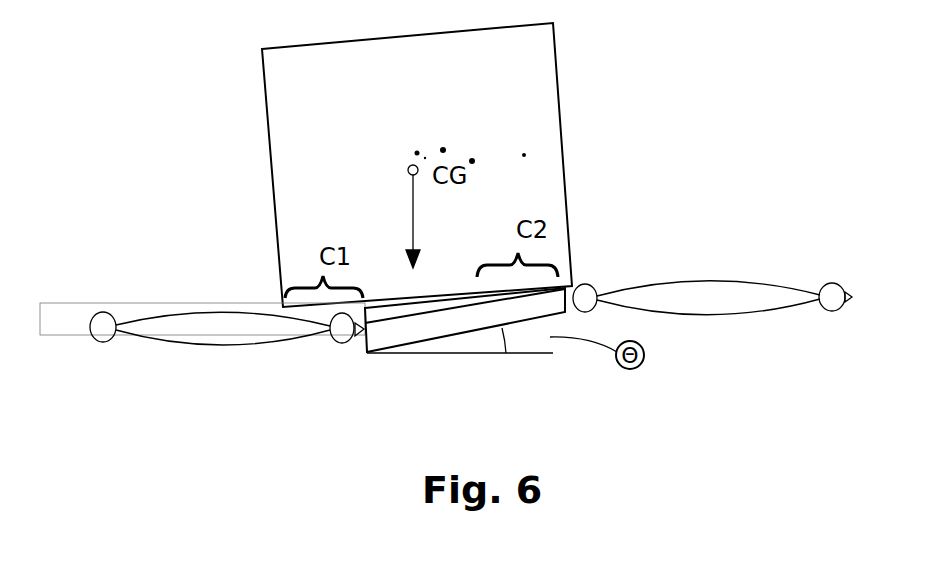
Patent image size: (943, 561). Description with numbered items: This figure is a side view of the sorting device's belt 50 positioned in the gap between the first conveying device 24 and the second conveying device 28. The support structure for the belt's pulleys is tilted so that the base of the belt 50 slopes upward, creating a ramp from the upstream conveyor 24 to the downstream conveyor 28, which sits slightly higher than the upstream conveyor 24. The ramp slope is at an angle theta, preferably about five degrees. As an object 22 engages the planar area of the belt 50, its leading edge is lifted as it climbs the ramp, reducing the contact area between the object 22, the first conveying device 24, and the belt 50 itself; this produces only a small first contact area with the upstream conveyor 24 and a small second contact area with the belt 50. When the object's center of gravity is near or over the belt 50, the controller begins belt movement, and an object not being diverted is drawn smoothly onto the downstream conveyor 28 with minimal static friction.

The object 22 is at (532, 103).
The first conveying device 24 is at (217, 333).
The second conveying device 28 is at (773, 307).
The belt 50 is at (505, 356).